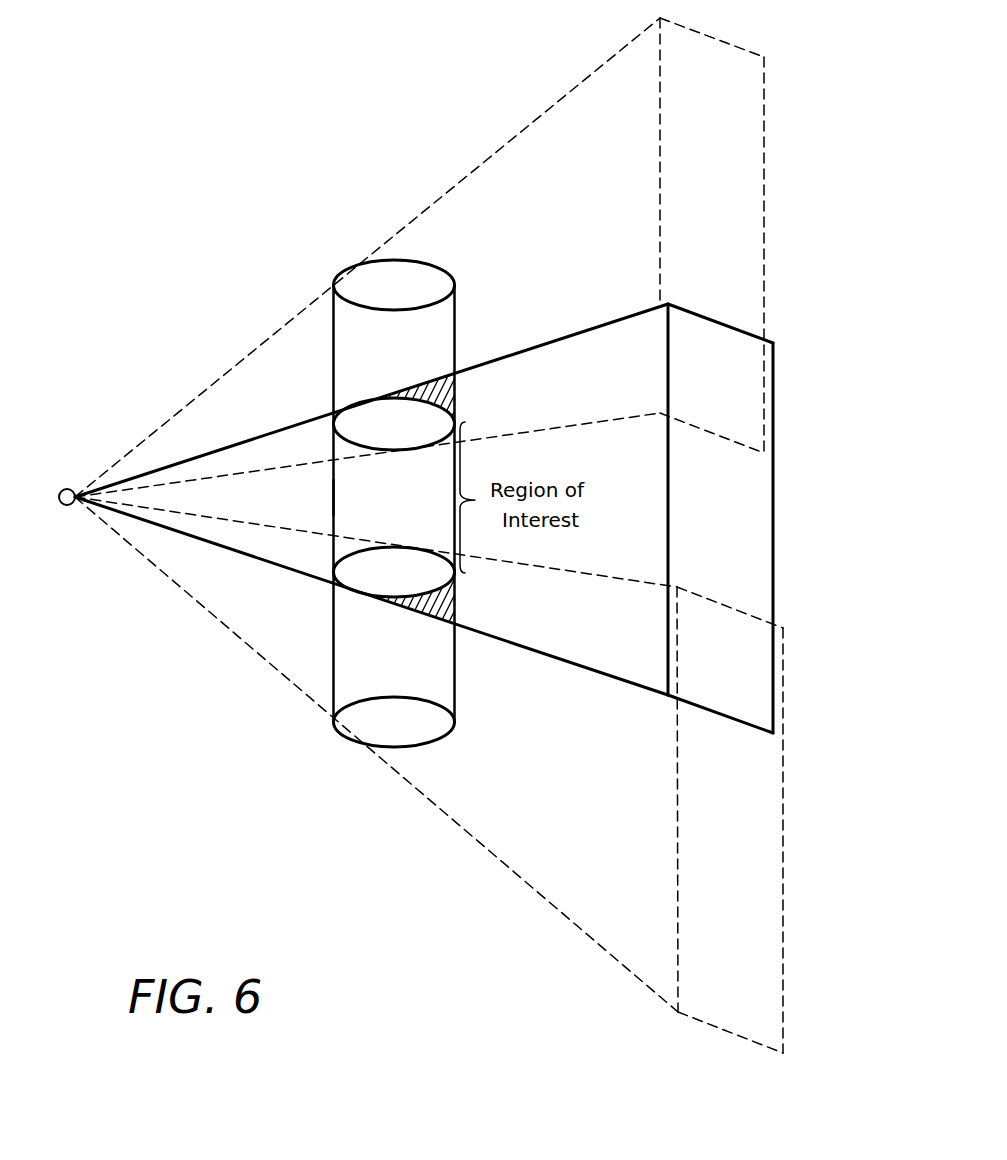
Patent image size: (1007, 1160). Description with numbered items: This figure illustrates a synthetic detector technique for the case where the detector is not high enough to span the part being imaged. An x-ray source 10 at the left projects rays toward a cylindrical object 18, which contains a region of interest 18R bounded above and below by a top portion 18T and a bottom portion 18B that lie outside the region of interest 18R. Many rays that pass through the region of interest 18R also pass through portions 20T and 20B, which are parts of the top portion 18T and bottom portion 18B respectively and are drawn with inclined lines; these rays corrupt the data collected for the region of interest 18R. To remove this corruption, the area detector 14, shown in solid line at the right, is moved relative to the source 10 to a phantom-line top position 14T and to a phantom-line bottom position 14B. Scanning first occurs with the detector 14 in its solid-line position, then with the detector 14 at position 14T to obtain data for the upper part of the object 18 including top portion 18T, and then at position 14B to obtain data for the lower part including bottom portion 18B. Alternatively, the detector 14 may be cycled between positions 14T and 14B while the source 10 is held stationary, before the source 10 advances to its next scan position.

The x-ray source 10 is at (59, 505).
The area detector 14 is at (773, 508).
The top position of detector 14T is at (764, 178).
The bottom position of detector 14B is at (783, 845).
The cylindrical object 18 is at (456, 340).
The top portion 18T is at (441, 263).
The bottom portion 18B is at (445, 742).
The region of interest 18R is at (333, 497).
The upper corrupting portion 20T is at (457, 395).
The lower corrupting portion 20B is at (457, 607).